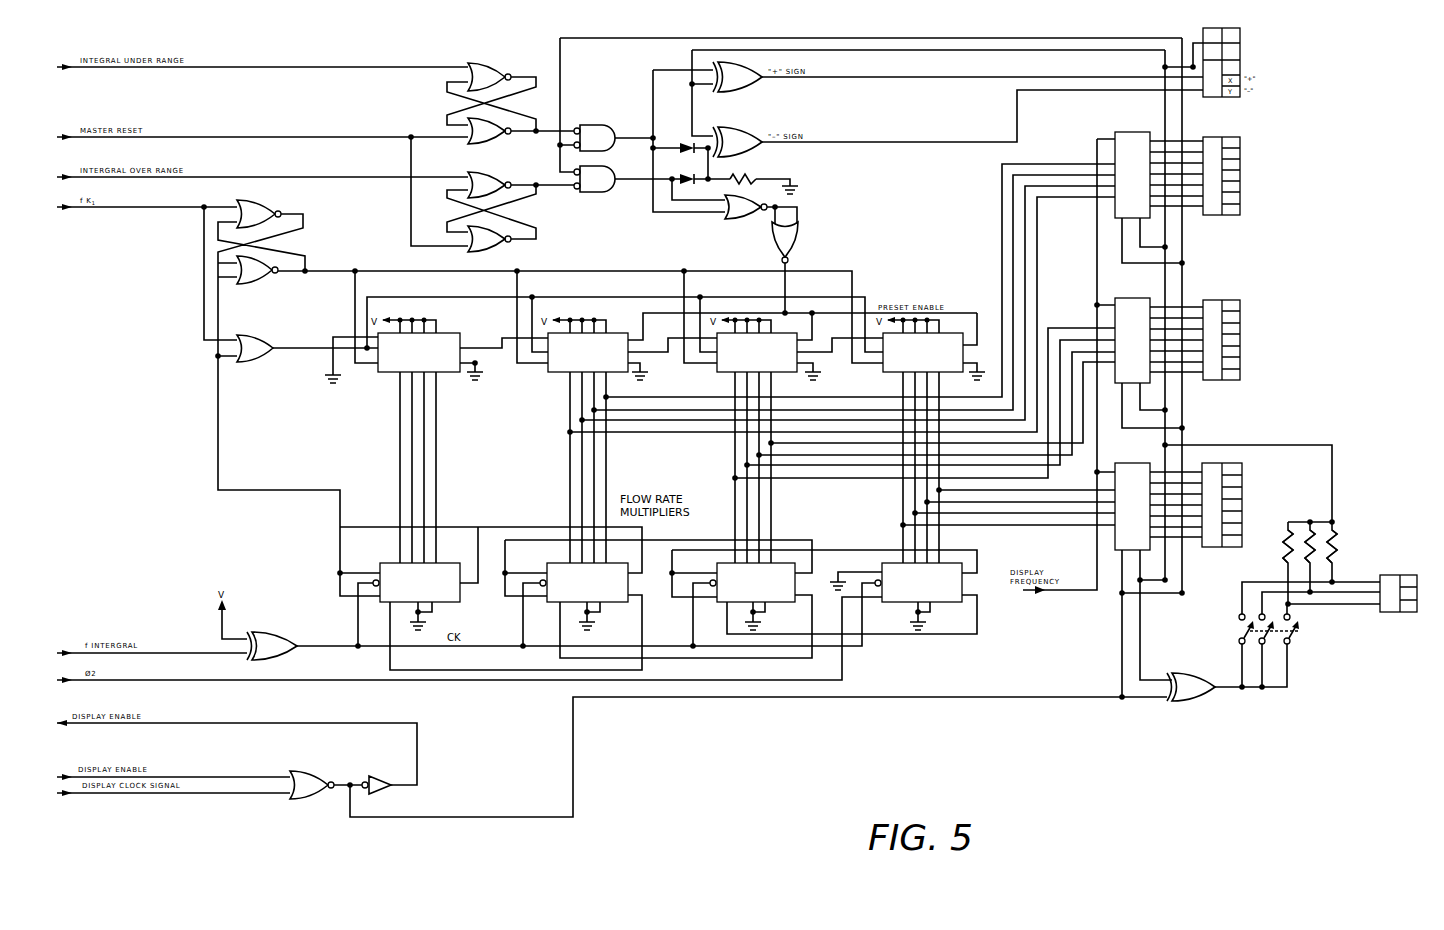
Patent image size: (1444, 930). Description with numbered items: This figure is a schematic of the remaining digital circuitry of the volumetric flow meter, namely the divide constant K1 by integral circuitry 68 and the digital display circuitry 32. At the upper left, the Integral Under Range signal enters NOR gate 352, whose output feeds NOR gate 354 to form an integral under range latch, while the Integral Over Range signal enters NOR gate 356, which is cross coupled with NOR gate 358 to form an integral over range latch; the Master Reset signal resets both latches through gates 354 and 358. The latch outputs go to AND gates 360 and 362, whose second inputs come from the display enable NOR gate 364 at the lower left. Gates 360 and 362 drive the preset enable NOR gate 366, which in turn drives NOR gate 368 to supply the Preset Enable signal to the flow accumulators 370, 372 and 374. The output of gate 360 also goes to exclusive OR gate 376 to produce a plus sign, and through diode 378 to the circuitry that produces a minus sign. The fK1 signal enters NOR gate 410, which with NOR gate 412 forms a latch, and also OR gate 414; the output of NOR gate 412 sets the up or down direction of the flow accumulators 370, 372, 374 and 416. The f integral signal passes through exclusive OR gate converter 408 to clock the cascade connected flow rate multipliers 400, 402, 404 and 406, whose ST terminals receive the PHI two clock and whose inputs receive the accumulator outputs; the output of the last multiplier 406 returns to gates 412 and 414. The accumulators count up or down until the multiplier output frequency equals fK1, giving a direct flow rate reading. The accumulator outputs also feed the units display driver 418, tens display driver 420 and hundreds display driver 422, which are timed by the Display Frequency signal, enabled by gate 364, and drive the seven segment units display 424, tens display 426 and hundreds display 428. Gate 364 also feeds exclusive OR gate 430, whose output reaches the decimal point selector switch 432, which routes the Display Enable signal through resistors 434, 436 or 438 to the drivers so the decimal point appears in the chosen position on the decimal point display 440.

The digital display circuitry 32 is at (1295, 185).
The divide constant K1 by integral circuitry 68 is at (905, 278).
The NOR gate 352 is at (478, 62).
The NOR gate 354 is at (488, 142).
The NOR gate 356 is at (470, 170).
The NOR gate 358 is at (490, 250).
The AND gate 360 is at (600, 125).
The AND gate 362 is at (600, 192).
The display enable NOR gate 364 is at (305, 772).
The preset enable NOR gate 366 is at (740, 219).
The NOR gate 368 is at (799, 236).
The flow accumulator 370 is at (548, 372).
The flow accumulator 372 is at (717, 374).
The flow accumulator 374 is at (883, 374).
The exclusive OR gate 376 is at (735, 66).
The diode 378 is at (690, 186).
The flow rate multiplier 400 is at (962, 600).
The flow rate multiplier 402 is at (785, 602).
The flow rate multiplier 404 is at (617, 602).
The flow rate multiplier 406 is at (448, 602).
The exclusive OR gate converter 408 is at (275, 632).
The NOR gate 410 is at (262, 210).
The NOR gate 412 is at (255, 284).
The OR gate 414 is at (258, 362).
The flow accumulator 416 is at (385, 375).
The units display driver 418 is at (1118, 118).
The tens display driver 420 is at (1142, 284).
The hundreds display driver 422 is at (1130, 463).
The units display 424 is at (1240, 145).
The tens display 426 is at (1240, 305).
The hundreds display 428 is at (1242, 473).
The exclusive OR gate 430 is at (1195, 700).
The decimal point selector switch 432 is at (1293, 647).
The resistor 434 is at (1284, 552).
The resistor 436 is at (1306, 528).
The resistor 438 is at (1335, 542).
The decimal point display 440 is at (1400, 575).